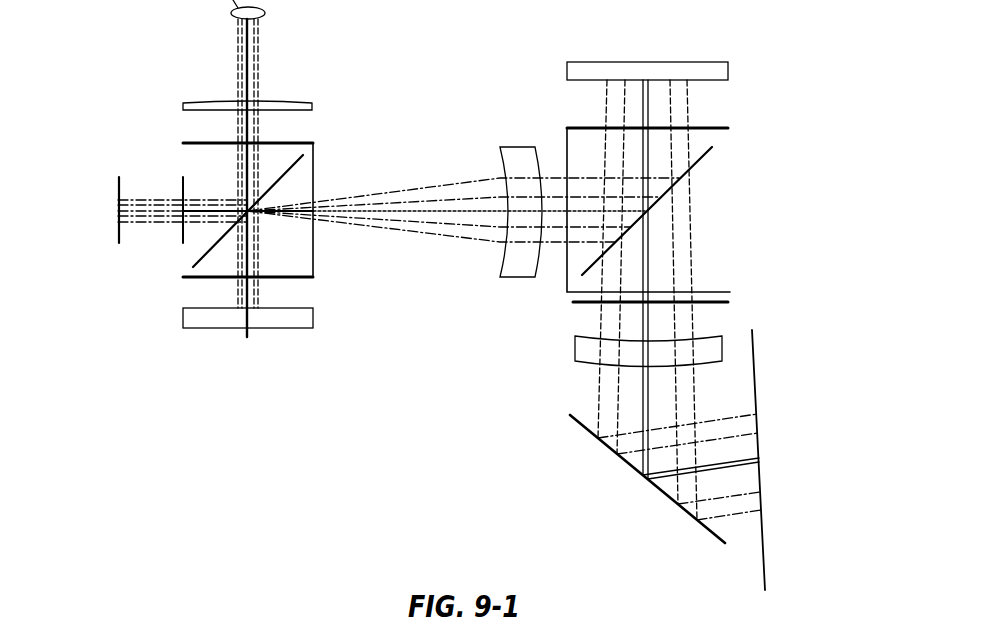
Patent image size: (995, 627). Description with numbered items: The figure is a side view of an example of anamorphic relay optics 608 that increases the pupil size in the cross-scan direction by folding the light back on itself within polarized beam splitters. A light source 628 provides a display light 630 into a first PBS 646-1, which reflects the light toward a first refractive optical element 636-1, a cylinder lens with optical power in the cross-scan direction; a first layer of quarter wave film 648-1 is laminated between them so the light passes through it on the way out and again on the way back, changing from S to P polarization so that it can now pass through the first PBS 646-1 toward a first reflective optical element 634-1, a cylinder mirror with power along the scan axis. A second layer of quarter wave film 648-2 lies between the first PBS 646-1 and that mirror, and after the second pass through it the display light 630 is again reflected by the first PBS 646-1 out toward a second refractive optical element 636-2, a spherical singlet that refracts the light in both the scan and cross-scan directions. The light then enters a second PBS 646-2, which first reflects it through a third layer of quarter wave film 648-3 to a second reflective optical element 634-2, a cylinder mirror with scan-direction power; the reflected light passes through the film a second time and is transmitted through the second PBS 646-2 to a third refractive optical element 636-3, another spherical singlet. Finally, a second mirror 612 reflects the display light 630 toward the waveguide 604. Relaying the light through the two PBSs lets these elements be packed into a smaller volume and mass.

The waveguide 604 is at (757, 392).
The relay optics 608 is at (437, 418).
The second mirror 612 is at (600, 437).
The light source 628 is at (118, 183).
The display light 630 is at (152, 212).
The first reflective optical element 634-1 is at (315, 312).
The second reflective optical element 634-2 is at (723, 71).
The first refractive optical element 636-1 is at (313, 106).
The second refractive optical element 636-2 is at (508, 279).
The third refractive optical element 636-3 is at (728, 302).
The first PBS 646-1 is at (315, 262).
The second PBS 646-2 is at (683, 172).
The first layer of quarter wave film 648-1 is at (315, 142).
The second layer of quarter wave film 648-2 is at (183, 278).
The third layer of quarter wave film 648-3 is at (728, 128).